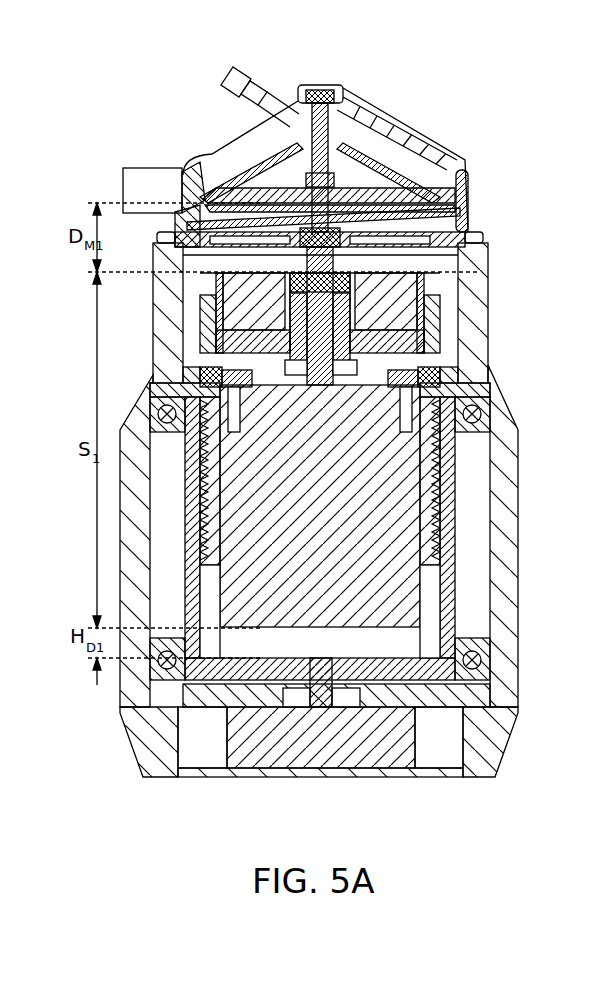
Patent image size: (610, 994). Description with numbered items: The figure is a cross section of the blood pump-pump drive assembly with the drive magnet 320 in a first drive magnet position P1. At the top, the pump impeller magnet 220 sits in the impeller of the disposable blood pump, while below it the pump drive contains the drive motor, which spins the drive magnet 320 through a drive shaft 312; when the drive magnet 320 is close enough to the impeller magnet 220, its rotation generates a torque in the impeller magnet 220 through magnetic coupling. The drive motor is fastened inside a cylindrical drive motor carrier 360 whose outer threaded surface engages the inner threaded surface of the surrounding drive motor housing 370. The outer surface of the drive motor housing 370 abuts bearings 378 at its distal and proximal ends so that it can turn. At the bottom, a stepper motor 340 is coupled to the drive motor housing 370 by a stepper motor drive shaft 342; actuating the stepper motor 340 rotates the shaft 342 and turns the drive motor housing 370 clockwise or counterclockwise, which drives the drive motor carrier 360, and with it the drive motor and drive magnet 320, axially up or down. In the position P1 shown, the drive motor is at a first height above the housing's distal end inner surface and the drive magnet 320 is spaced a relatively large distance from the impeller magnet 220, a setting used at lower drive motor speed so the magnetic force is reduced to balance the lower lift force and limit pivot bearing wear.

The pump impeller magnet 220 is at (358, 150).
The first drive magnet position P1 is at (493, 252).
The pump drive magnet 320 is at (410, 308).
The drive shaft 312 is at (345, 357).
The bearings 378 is at (473, 410).
The drive motor carrier 360 is at (447, 522).
The drive motor housing 370 is at (457, 600).
The stepper motor drive shaft 342 is at (325, 677).
The stepper motor 340 is at (335, 723).